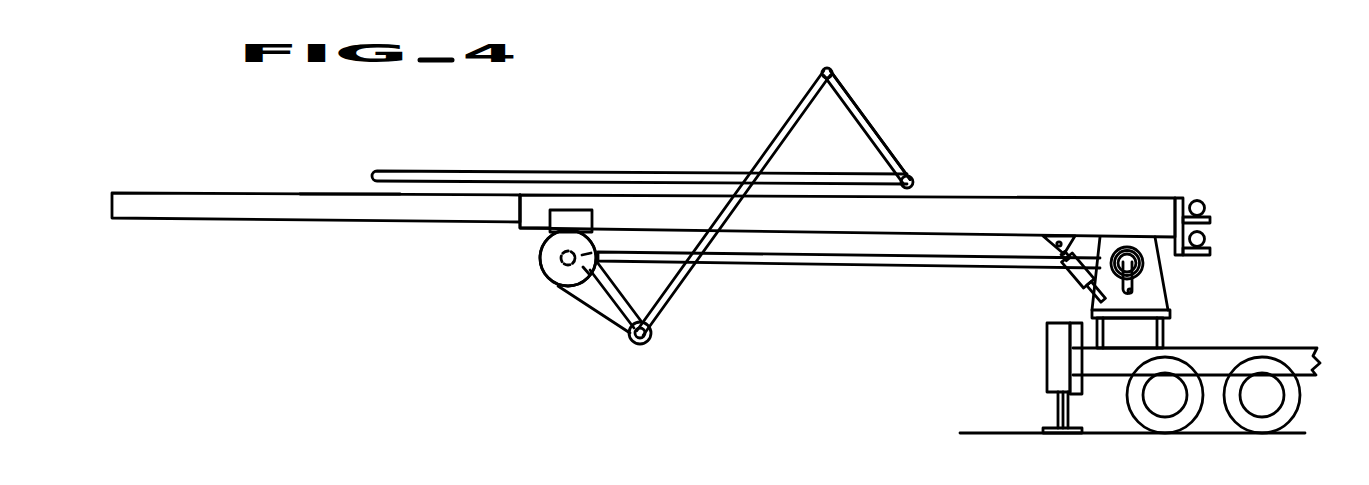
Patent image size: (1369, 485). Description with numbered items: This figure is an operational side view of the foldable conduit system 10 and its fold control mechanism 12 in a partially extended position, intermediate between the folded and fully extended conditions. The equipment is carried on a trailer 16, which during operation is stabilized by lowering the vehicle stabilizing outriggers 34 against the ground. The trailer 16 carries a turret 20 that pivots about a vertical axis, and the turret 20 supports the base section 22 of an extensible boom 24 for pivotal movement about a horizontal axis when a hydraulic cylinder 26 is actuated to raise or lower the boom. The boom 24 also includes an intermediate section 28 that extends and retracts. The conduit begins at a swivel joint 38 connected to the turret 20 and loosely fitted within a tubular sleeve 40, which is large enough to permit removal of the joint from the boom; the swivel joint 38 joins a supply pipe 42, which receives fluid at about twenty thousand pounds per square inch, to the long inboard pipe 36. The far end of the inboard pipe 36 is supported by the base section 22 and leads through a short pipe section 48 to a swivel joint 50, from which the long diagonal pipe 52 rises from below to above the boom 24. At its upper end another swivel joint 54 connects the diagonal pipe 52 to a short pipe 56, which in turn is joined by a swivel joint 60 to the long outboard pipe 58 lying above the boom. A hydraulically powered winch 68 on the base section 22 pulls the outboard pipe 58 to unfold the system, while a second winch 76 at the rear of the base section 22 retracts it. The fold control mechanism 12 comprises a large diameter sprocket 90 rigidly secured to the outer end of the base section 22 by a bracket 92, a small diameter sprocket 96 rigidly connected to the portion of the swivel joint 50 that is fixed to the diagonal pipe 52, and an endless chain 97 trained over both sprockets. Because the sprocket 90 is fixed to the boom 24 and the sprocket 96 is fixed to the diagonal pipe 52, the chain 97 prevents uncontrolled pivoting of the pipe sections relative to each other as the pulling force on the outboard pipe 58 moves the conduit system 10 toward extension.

The foldable conduit system 10 is at (866, 96).
The fold control mechanism 12 is at (545, 283).
The trailer 16 is at (1263, 348).
The turret 20 is at (1164, 297).
The base section 22 is at (1000, 200).
The extensible boom 24 is at (230, 188).
The hydraulic cylinder 26 is at (1072, 272).
The intermediate section 28 is at (292, 193).
The vehicle stabilizing outriggers 34 is at (1057, 401).
The inboard pipe 36 is at (748, 268).
The swivel joint 38 is at (1146, 268).
The tubular sleeve 40 is at (1128, 250).
The supply pipe 42 is at (1098, 295).
The short pipe section 48 is at (607, 312).
The swivel joint 50 is at (652, 338).
The diagonal pipe 52 is at (770, 152).
The swivel joint 54 is at (821, 73).
The short pipe 56 is at (876, 130).
The outboard pipe 58 is at (412, 171).
The swivel joint 60 is at (912, 178).
The hydraulically powered winch 68 is at (1205, 241).
The second winch 76 is at (1204, 205).
The large diameter sprocket 90 is at (540, 258).
The bracket 92 is at (545, 229).
The small diameter sprocket 96 is at (636, 345).
The endless chain 97 is at (582, 302).